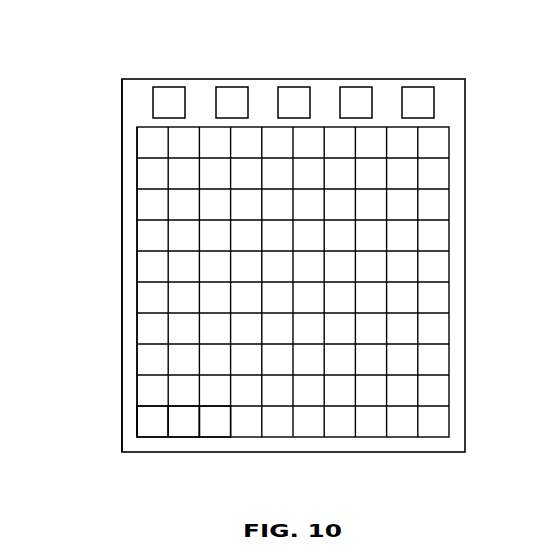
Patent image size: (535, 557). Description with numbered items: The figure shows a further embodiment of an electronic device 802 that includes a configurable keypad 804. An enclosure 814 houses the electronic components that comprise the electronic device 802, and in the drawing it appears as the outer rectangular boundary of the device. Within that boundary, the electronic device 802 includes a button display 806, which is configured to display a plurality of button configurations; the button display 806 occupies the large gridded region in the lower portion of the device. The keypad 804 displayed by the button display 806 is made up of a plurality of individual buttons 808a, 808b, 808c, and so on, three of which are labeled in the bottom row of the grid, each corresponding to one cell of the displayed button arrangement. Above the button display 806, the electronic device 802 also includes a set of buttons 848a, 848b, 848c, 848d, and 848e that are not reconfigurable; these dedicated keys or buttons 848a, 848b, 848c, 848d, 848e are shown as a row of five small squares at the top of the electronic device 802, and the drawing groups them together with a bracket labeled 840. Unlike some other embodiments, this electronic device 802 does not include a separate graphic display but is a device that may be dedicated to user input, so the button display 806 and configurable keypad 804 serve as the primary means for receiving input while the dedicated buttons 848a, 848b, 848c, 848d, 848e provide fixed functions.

The electronic device 802 is at (141, 68).
The enclosure 814 is at (121, 177).
The button display 806 is at (475, 128).
The configurable keypad 804 is at (137, 265).
The row of sensors 840 is at (475, 82).
The dedicated button 848a is at (168, 87).
The dedicated button 848b is at (232, 87).
The dedicated button 848c is at (294, 87).
The dedicated button 848d is at (356, 87).
The dedicated button 848e is at (417, 87).
The individual button 808a is at (143, 429).
The individual button 808b is at (183, 429).
The individual button 808c is at (226, 429).